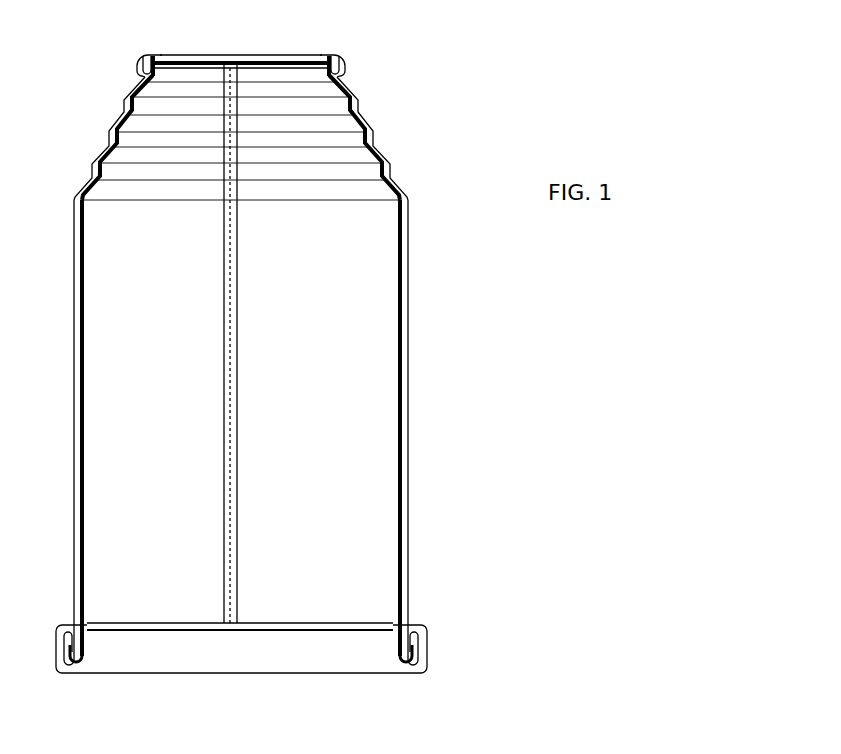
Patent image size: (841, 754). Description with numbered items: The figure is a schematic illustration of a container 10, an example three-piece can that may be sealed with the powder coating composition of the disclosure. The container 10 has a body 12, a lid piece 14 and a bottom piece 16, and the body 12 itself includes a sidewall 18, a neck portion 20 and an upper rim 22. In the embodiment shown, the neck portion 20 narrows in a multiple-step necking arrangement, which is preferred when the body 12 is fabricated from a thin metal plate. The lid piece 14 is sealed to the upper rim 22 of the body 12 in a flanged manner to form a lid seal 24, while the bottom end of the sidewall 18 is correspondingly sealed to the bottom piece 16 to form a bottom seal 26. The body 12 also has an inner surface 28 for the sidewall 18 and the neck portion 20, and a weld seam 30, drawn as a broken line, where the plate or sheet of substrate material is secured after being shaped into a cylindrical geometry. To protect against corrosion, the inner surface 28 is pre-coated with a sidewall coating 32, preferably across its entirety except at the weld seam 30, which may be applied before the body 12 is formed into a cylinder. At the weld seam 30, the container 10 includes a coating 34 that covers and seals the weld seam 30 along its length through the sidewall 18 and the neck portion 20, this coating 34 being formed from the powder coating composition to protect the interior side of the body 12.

The container 10 is at (645, 320).
The body 12 is at (303, 430).
The lid piece 14 is at (270, 55).
The bottom piece 16 is at (328, 673).
The sidewall 18 is at (422, 490).
The neck portion 20 is at (408, 112).
The upper rim 22 is at (345, 42).
The lid seal 24 is at (152, 62).
The bottom seal 26 is at (84, 645).
The inner surface 28 is at (83, 412).
The weld seam 30 is at (225, 343).
The sidewall coating 32 is at (83, 505).
The coating 34 is at (224, 338).